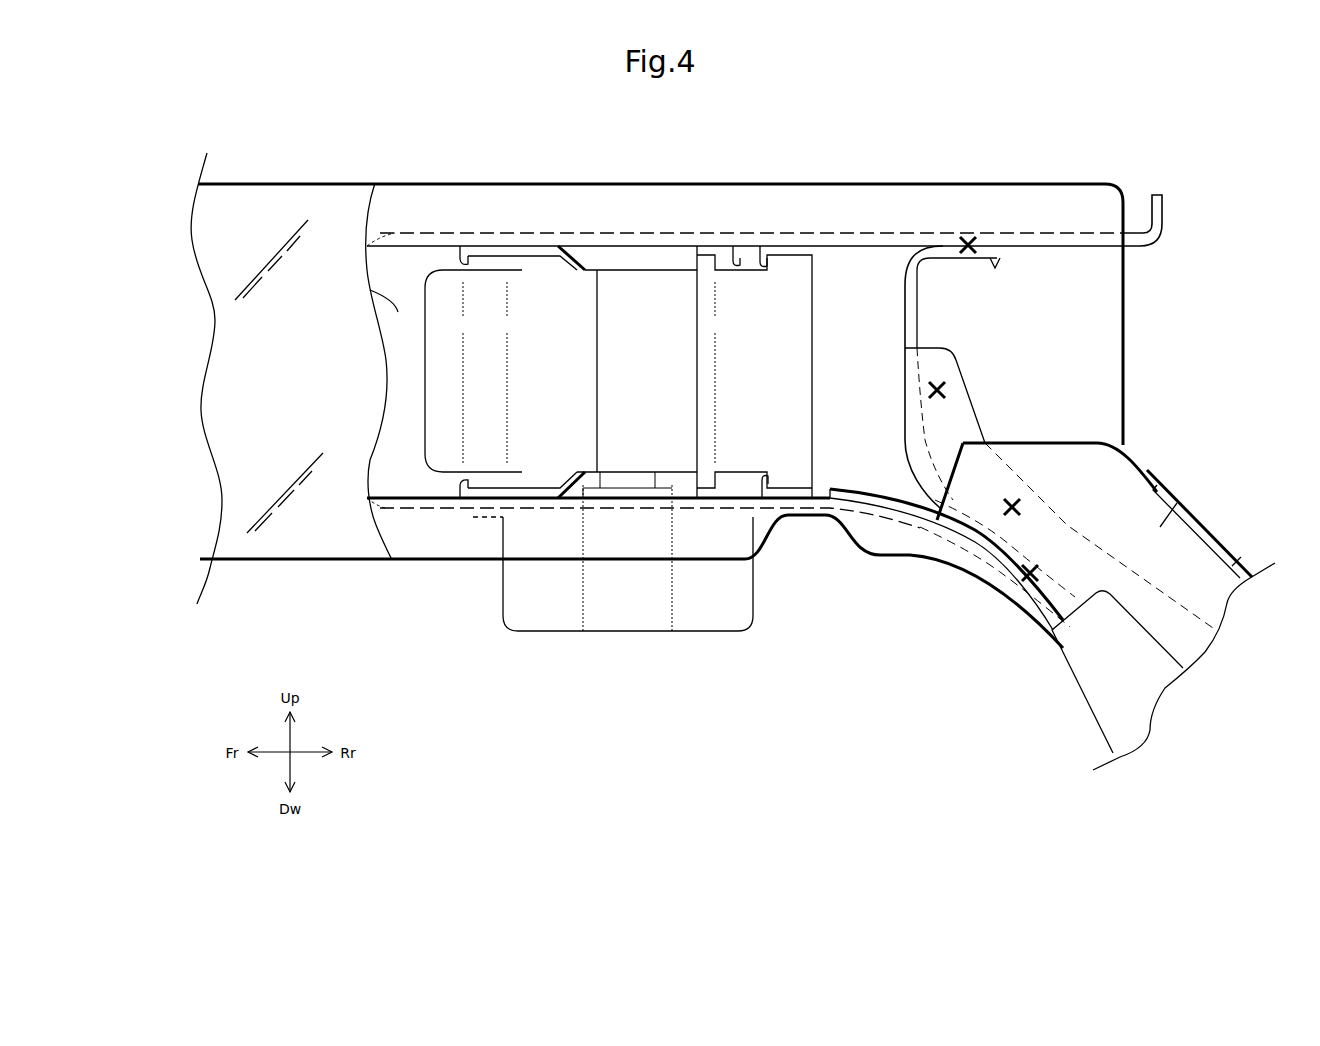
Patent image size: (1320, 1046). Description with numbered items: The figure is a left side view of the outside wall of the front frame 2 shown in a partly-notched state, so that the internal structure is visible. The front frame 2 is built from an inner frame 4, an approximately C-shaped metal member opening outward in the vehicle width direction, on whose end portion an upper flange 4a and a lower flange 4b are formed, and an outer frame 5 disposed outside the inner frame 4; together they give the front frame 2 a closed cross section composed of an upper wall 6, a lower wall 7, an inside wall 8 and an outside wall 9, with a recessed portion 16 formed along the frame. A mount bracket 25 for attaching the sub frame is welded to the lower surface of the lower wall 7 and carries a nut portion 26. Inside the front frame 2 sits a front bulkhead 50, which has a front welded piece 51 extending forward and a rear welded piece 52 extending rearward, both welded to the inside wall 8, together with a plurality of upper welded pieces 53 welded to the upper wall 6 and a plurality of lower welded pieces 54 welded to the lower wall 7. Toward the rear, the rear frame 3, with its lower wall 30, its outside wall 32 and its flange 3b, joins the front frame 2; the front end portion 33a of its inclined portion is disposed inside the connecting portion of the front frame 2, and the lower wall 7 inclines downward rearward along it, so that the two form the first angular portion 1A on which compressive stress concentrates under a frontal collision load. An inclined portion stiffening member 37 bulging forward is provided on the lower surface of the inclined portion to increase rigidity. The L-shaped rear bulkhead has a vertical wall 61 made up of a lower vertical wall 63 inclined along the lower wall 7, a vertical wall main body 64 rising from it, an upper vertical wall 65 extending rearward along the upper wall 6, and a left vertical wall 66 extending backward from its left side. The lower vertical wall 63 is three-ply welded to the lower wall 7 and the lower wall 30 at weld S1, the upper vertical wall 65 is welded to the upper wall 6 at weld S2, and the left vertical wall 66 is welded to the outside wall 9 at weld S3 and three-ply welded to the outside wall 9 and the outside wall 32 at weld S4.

The first angular portion 1A is at (935, 620).
The front frame 2 is at (258, 182).
The rear frame 3 is at (1205, 520).
The flange 3b is at (1238, 557).
The inner frame 4 is at (680, 276).
The upper flange 4a is at (407, 200).
The lower flange 4b is at (407, 537).
The outer frame 5 is at (555, 562).
The upper wall 6 is at (390, 233).
The lower wall 7 is at (397, 510).
The inside wall 8 is at (398, 308).
The outside wall 9 is at (280, 540).
The recessed portion 16 is at (878, 278).
The mount bracket 25 is at (532, 632).
The nut portion 26 is at (583, 600).
The lower wall 30 is at (890, 538).
The outside wall 32 is at (1180, 503).
The front end portion 33a is at (1098, 432).
The inclined portion stiffening member 37 is at (1107, 695).
The front bulkhead 50 is at (640, 300).
The front welded piece 51 is at (440, 355).
The rear welded piece 52 is at (800, 285).
The upper welded pieces 53 is at (463, 262).
The lower welded pieces 54 is at (463, 498).
The vertical wall 61 is at (963, 377).
The lower vertical wall 63 is at (1045, 545).
The vertical wall main body 64 is at (918, 300).
The upper vertical wall 65 is at (995, 262).
The left vertical wall 66 is at (952, 418).
The weld S1 is at (1030, 577).
The weld S2 is at (968, 243).
The weld S3 is at (935, 392).
The weld S4 is at (1018, 508).